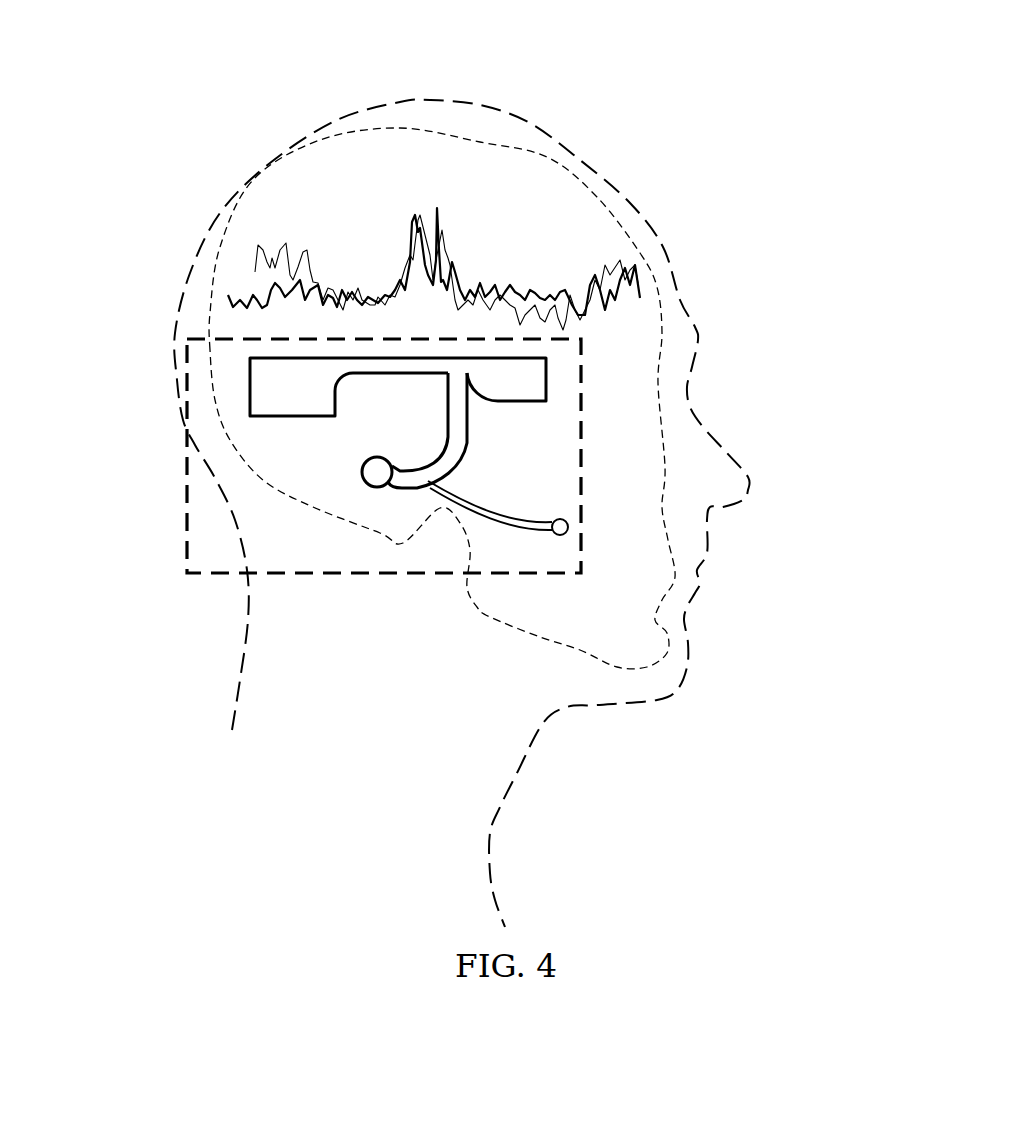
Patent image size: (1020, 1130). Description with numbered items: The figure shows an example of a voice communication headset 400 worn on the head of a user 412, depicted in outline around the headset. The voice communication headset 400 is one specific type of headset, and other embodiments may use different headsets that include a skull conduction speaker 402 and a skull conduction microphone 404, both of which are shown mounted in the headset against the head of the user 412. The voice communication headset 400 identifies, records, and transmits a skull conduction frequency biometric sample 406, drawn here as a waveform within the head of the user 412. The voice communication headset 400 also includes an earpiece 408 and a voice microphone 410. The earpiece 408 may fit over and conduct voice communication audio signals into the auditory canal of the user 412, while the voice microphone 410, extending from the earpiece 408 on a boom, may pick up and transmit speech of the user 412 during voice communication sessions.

The voice communication headset 400 is at (187, 538).
The skull conduction speaker 402 is at (265, 417).
The skull conduction microphone 404 is at (537, 379).
The skull conduction frequency biometric sample 406 is at (522, 264).
The earpiece 408 is at (380, 488).
The voice microphone 410 is at (568, 526).
The user 412 is at (302, 133).